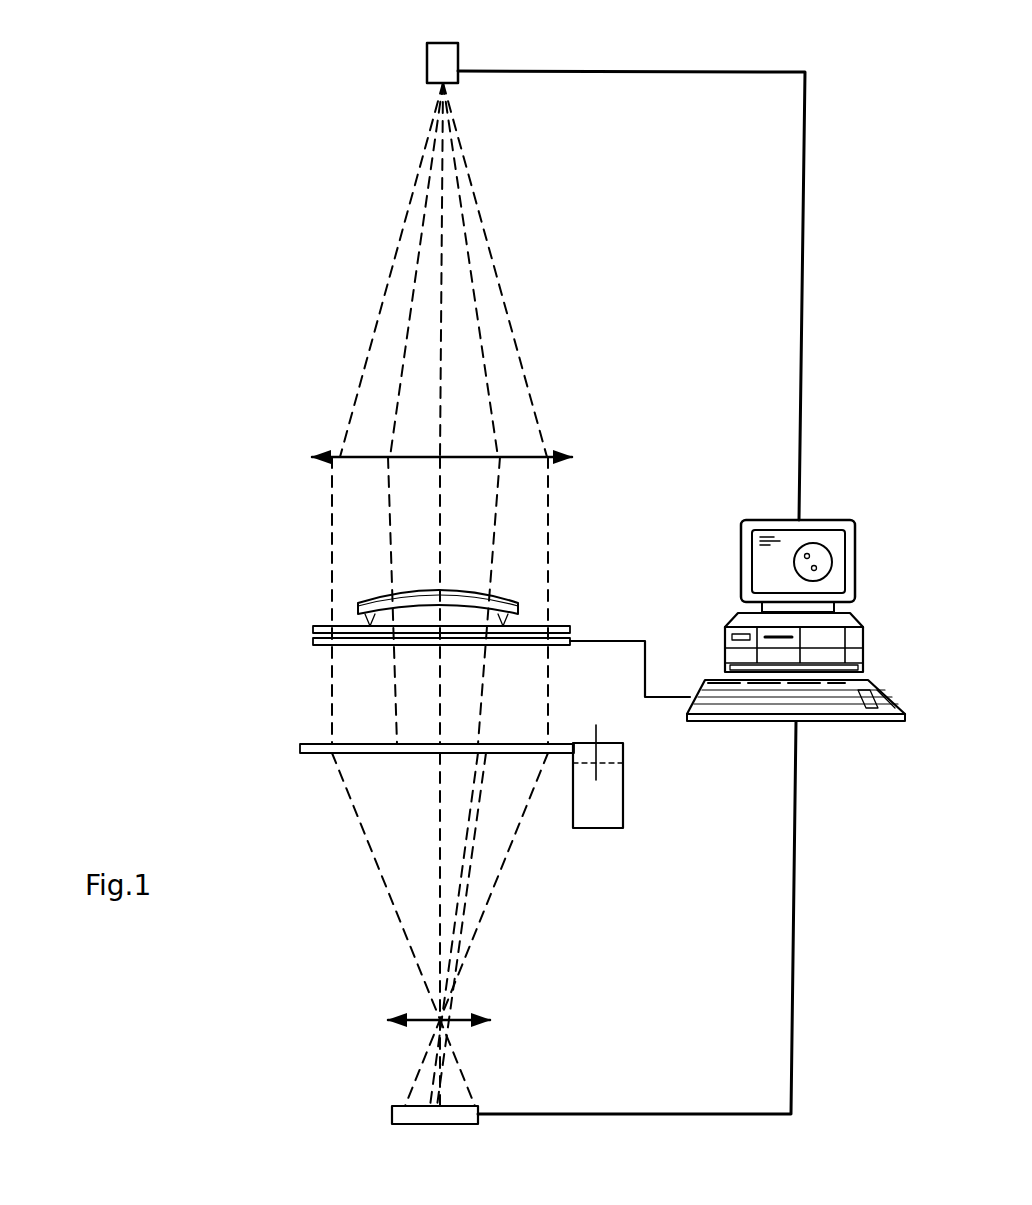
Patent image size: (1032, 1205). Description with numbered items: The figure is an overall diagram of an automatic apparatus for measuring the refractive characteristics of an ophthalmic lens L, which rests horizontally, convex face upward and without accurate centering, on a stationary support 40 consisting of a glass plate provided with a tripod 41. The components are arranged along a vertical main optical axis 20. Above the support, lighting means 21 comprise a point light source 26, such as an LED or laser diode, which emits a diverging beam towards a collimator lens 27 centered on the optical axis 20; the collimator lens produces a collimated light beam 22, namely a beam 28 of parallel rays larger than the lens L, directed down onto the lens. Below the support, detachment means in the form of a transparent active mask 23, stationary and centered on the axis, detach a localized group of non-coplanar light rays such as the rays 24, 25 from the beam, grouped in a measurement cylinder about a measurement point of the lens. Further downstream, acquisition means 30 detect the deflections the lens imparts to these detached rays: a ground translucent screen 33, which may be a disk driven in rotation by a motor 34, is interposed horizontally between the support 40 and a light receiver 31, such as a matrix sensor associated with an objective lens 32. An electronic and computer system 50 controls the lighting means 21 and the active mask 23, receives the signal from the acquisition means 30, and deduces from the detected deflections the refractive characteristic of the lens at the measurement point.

The lighting means 21 is at (300, 178).
The light source 26 is at (455, 60).
The collimated light beam 22 is at (503, 280).
The collimator lens 27 is at (372, 456).
The light ray 24 is at (388, 528).
The beam of parallel light rays 28 is at (548, 512).
The light ray 25 is at (500, 508).
The main optical axis 20 is at (440, 812).
The ophthalmic lens L is at (386, 601).
The tripod 41 is at (372, 628).
The stationary support 40 is at (313, 628).
The active mask 23 is at (313, 644).
The ground translucent screen 33 is at (300, 748).
The motor 34 is at (622, 808).
The acquisition means 30 is at (310, 962).
The objective lens 32 is at (478, 1026).
The light receiver 31 is at (400, 1118).
The electronic and computer system 50 is at (843, 722).